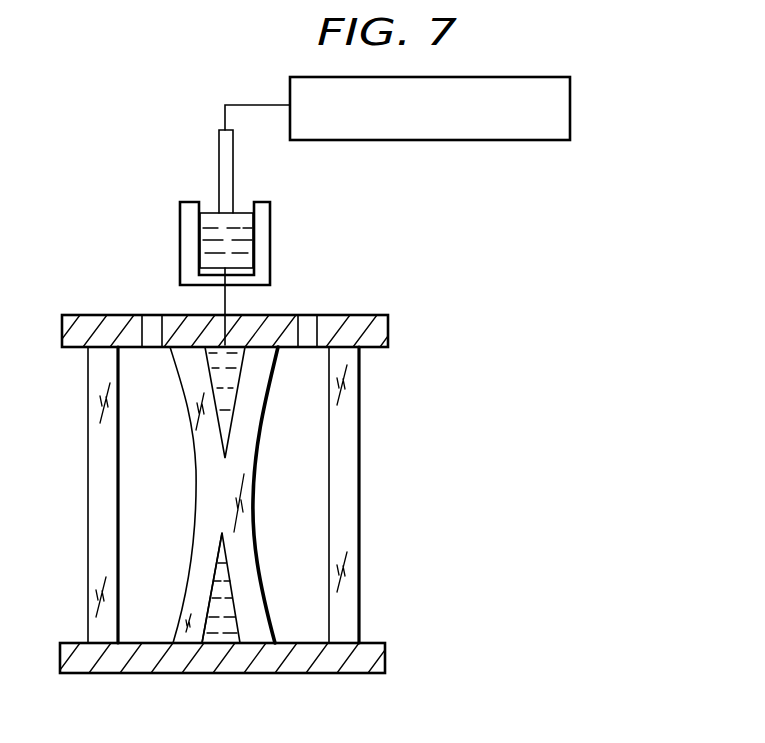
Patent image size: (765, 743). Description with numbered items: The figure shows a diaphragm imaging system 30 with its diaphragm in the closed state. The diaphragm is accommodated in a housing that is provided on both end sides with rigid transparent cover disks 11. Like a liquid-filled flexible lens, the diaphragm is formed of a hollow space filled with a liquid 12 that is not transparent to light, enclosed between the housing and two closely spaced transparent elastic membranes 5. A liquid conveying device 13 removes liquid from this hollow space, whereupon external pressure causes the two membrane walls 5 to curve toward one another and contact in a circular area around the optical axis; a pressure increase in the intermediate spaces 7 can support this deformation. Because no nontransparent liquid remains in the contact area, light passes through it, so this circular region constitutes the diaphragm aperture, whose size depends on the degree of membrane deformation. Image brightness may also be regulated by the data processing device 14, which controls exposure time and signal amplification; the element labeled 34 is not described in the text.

The transparent elastic membranes 5 is at (195, 610).
The intermediate spaces 7 is at (140, 523).
The rigid transparent cover disks 11 is at (233, 495).
The liquid 12 is at (220, 633).
The liquid conveying device 13 is at (260, 270).
The data processing device 14 is at (558, 118).
The diaphragm imaging system 30 is at (403, 351).
The liquid meniscus 34 is at (201, 646).